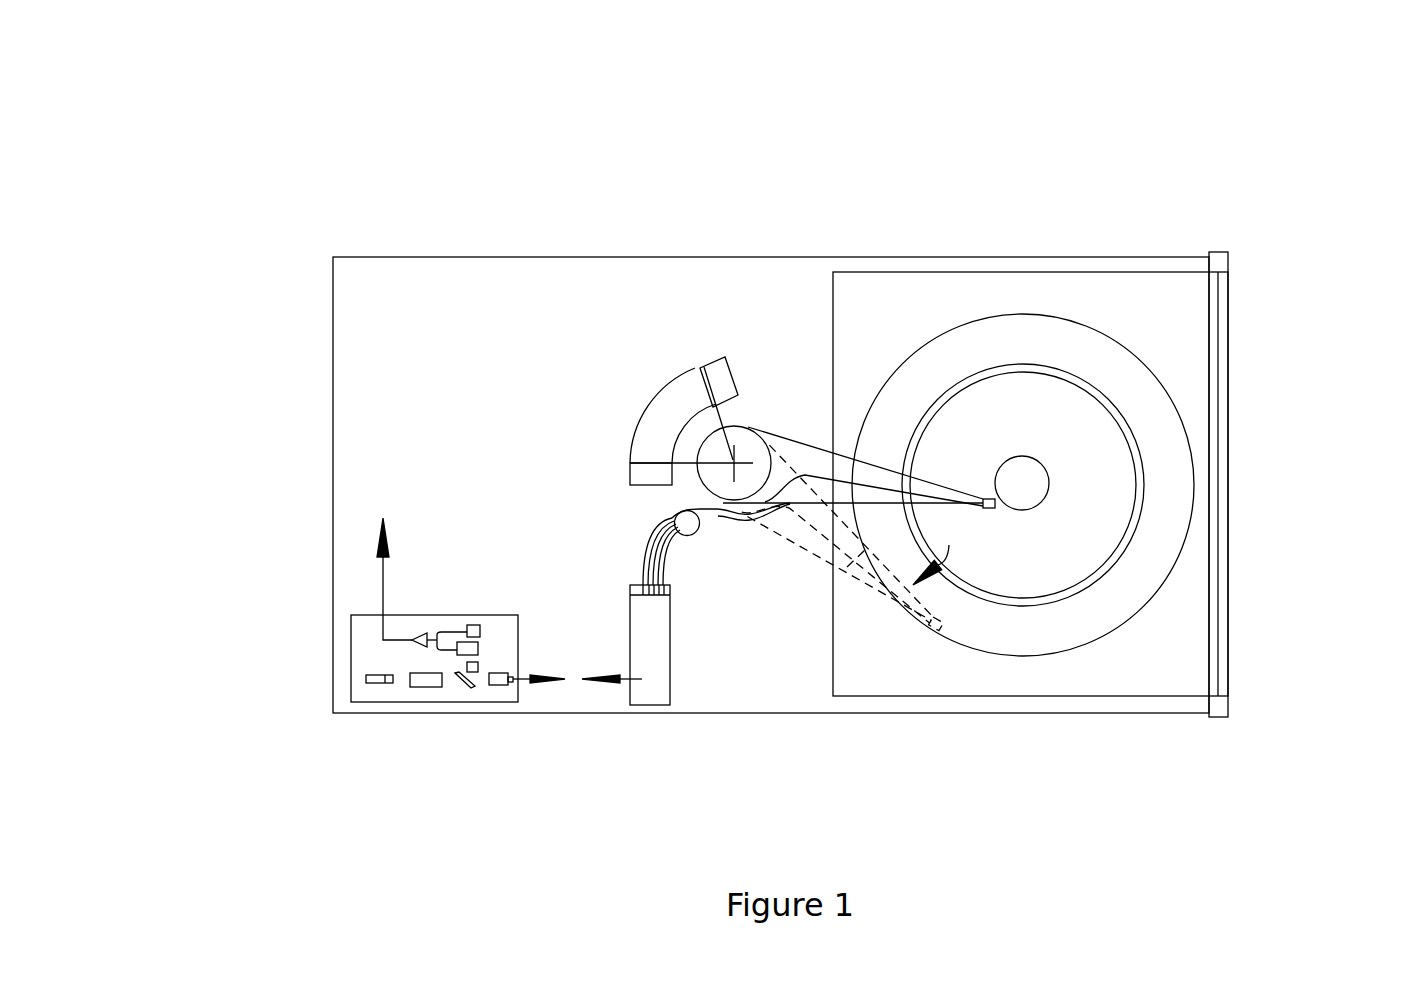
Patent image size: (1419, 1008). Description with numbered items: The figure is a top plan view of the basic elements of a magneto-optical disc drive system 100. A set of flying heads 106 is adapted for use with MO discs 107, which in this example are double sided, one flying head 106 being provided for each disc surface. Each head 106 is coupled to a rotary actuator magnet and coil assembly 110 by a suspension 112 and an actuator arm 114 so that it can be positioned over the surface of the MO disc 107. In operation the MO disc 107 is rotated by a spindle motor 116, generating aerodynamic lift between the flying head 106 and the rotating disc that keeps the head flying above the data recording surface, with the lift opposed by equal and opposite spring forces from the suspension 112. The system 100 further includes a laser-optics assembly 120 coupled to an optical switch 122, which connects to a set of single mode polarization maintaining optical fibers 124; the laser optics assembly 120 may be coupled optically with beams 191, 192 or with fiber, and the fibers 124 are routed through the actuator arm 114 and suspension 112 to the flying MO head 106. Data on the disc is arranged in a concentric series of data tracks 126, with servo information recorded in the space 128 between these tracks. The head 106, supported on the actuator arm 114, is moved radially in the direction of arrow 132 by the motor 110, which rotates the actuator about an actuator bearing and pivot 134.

The system 100 is at (1283, 88).
The flying head 106 is at (1013, 543).
The MO disc 107 is at (1068, 280).
The rotary actuator magnet and coil assembly 110 is at (712, 335).
The suspension 112 is at (926, 450).
The actuator arm 114 is at (877, 440).
The spindle motor 116 is at (1030, 478).
The laser-optics assembly 120 is at (392, 718).
The optical switch 122 is at (702, 667).
The single mode polarization maintaining optical fibers 124 is at (612, 500).
The data tracks 126 is at (1160, 572).
The servo track regions 128 is at (1142, 483).
The arrow 132 is at (948, 542).
The actuator bearing and pivot 134 is at (762, 393).
The beam 191 is at (540, 724).
The beam 192 is at (627, 724).